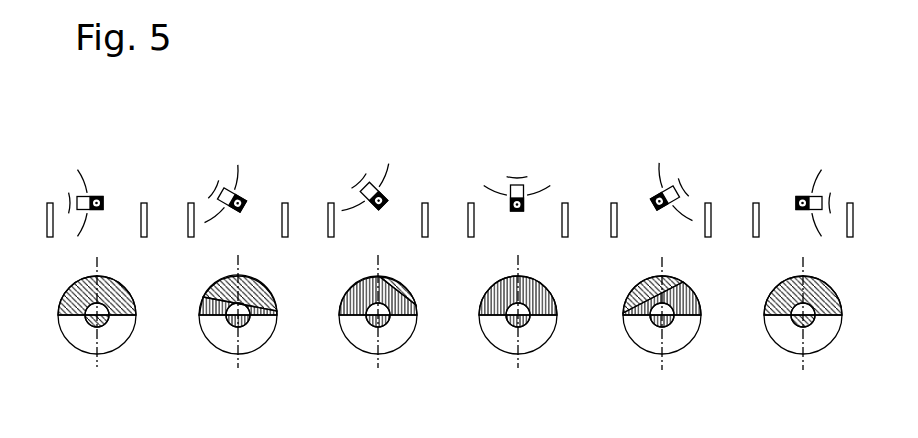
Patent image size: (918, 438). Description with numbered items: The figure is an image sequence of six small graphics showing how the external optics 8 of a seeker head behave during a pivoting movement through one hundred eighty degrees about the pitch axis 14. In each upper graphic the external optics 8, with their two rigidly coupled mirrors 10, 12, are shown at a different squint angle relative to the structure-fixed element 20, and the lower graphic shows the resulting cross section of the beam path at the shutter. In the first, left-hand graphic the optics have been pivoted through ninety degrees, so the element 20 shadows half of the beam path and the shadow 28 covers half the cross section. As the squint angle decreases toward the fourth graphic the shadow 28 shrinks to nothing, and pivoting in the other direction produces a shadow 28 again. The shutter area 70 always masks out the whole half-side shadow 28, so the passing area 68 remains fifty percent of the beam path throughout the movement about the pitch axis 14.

The external optics 8 is at (91, 193).
The mirror 10 is at (388, 176).
The mirror 12 is at (362, 178).
The pitch axis 14 is at (98, 271).
The element fixed to the structure 20 is at (49, 203).
The shadow 28 is at (63, 304).
The passing area 68 is at (265, 337).
The shutter area 70 is at (130, 300).